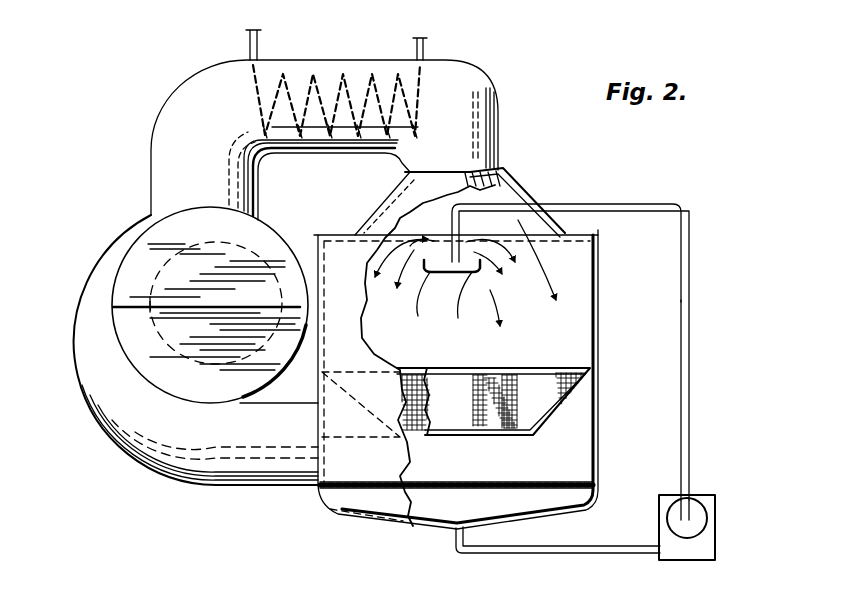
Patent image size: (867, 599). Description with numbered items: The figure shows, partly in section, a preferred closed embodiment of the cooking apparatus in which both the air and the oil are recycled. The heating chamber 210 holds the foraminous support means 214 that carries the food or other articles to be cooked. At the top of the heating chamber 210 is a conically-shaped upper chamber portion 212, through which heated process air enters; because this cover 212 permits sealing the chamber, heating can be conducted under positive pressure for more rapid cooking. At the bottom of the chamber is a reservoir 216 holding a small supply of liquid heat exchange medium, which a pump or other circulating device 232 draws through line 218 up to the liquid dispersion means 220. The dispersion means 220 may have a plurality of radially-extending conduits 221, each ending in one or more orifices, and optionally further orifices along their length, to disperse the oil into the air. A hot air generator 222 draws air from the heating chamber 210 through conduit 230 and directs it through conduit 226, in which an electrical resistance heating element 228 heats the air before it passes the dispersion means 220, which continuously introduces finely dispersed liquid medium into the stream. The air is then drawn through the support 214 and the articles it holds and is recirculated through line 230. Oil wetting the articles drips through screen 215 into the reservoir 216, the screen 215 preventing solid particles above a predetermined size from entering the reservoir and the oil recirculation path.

The heating chamber 210 is at (600, 305).
The conically-shaped upper chamber portion 212 is at (527, 205).
The foraminous support means 214 is at (522, 437).
The screen 215 is at (476, 482).
The reservoir 216 is at (432, 526).
The line 218 is at (690, 418).
The liquid dispersion means 220 is at (459, 305).
The radially-extending conduits 221 is at (465, 285).
The hot air generator 222 is at (146, 146).
The conduit 226 is at (493, 78).
The electrical resistance heating element 228 is at (346, 76).
The conduit 230 is at (244, 465).
The pump 232 is at (708, 525).